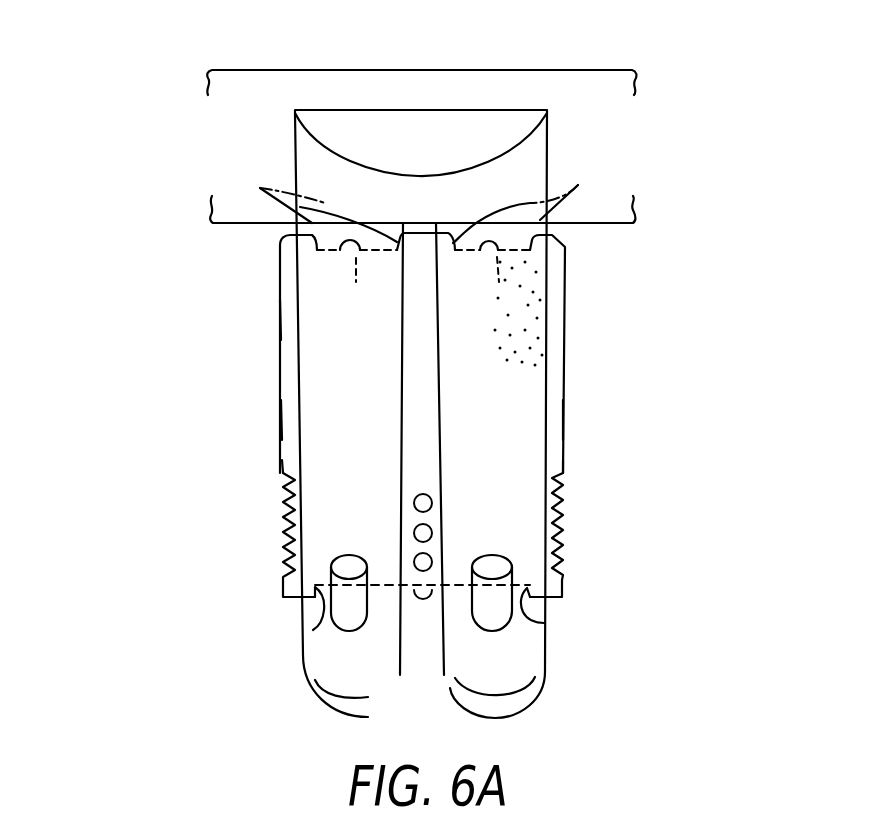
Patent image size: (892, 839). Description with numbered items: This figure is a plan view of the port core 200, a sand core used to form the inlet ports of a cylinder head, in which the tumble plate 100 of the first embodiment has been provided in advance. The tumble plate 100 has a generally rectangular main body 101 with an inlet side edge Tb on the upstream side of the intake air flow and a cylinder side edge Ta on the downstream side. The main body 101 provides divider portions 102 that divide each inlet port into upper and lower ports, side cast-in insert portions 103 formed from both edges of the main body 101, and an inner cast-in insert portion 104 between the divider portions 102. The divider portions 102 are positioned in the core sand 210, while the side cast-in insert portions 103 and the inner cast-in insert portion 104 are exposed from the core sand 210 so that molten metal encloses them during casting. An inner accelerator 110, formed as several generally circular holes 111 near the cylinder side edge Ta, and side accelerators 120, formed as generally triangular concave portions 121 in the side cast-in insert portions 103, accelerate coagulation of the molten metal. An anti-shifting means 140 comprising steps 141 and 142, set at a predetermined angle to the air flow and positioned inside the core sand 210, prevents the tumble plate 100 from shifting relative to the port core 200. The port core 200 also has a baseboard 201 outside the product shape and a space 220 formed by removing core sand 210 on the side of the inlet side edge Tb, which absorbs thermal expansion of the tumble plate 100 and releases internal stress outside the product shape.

The tumble plate 100 is at (275, 283).
The main body 101 is at (280, 318).
The divider portion 102 is at (327, 477).
The side cast-in insert portion 103 is at (281, 417).
The inner cast-in insert portion 104 is at (413, 365).
The inner accelerator 110 is at (410, 524).
The holes 111 is at (431, 498).
The side accelerator 120 is at (275, 533).
The concave portion 121 is at (283, 540).
The anti-shifting means 140 is at (188, 170).
The step 141 is at (318, 626).
The step 142 is at (426, 197).
The port core 200 is at (283, 33).
The baseboard 201 is at (598, 83).
The core sand 210 is at (523, 333).
The space 220 is at (409, 135).
The cylinder side edge Ta is at (420, 598).
The inlet side edge Tb is at (430, 291).